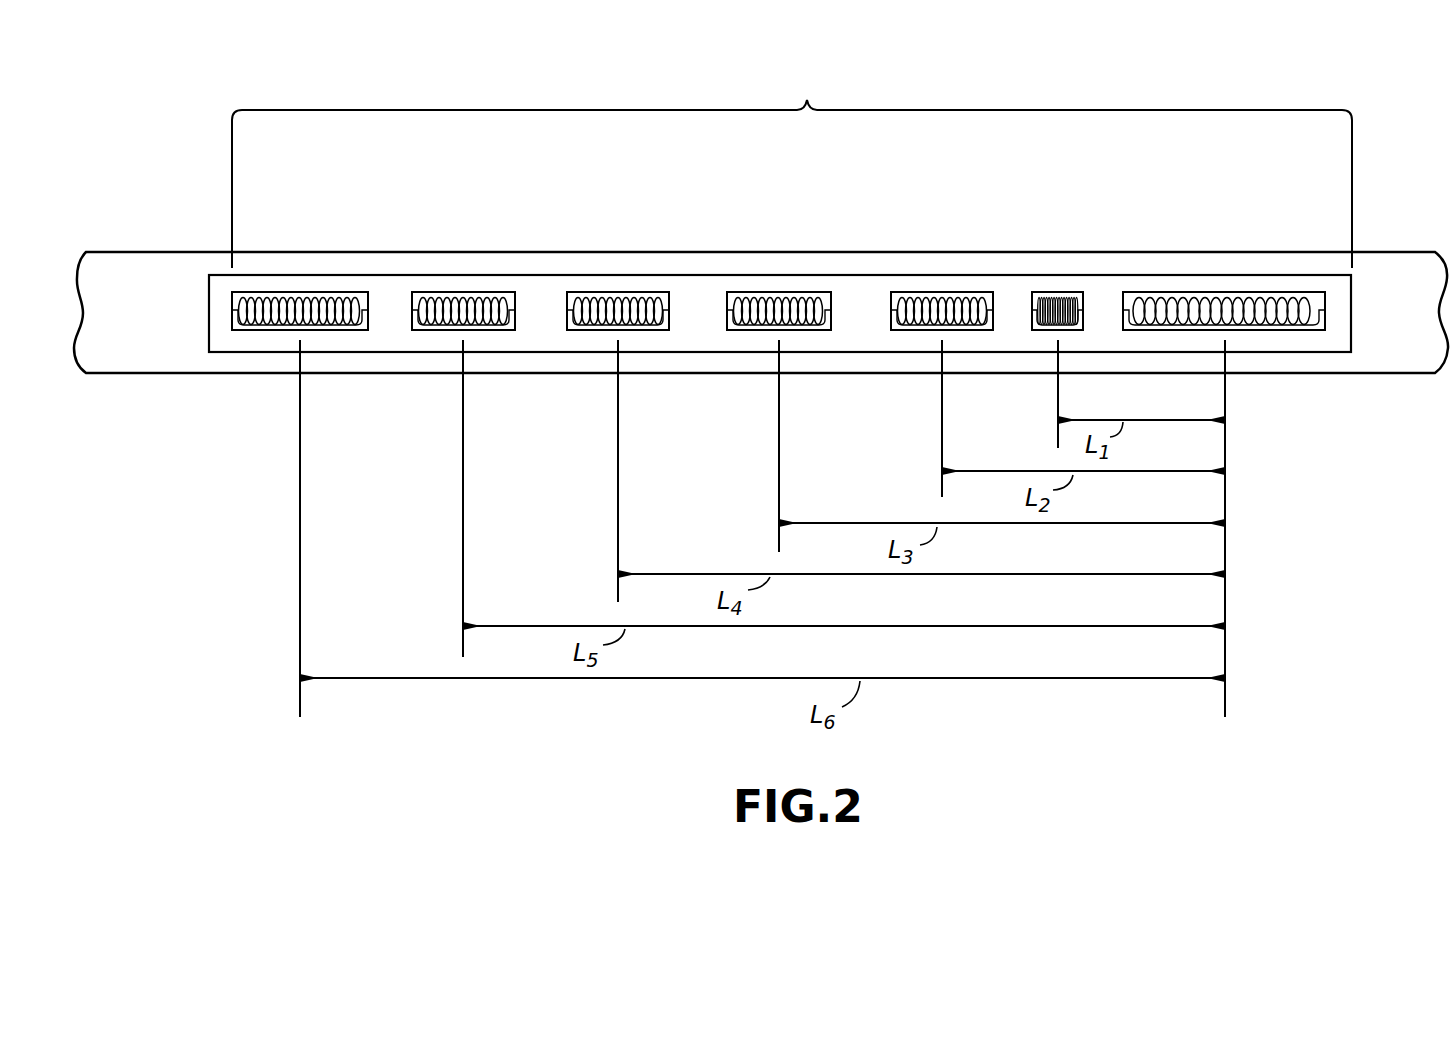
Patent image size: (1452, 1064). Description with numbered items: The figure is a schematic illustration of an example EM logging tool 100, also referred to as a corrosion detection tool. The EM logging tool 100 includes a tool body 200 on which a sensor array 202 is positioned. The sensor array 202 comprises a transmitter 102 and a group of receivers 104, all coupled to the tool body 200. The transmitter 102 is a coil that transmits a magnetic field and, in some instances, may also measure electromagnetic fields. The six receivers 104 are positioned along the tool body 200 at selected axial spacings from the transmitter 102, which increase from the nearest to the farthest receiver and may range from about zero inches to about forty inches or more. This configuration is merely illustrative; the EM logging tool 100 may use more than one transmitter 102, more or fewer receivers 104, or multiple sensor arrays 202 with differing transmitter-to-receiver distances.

The EM logging tool 100 is at (1302, 390).
The transmitter 102 is at (1182, 297).
The receivers 104 is at (325, 297).
The tool body 200 is at (1355, 373).
The sensor array 202 is at (807, 100).